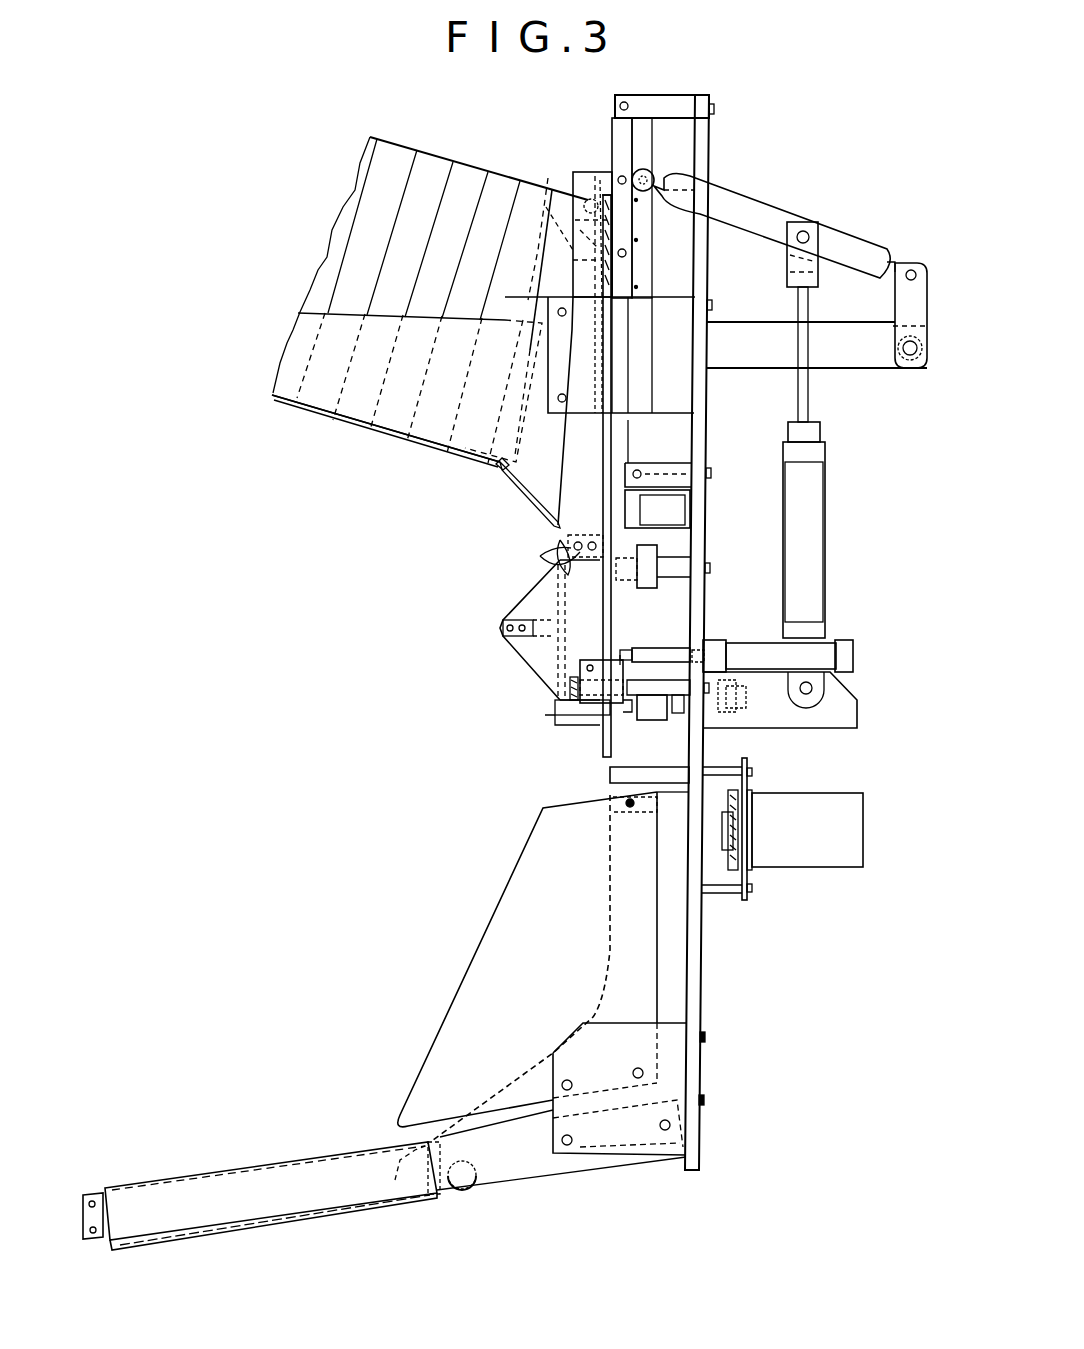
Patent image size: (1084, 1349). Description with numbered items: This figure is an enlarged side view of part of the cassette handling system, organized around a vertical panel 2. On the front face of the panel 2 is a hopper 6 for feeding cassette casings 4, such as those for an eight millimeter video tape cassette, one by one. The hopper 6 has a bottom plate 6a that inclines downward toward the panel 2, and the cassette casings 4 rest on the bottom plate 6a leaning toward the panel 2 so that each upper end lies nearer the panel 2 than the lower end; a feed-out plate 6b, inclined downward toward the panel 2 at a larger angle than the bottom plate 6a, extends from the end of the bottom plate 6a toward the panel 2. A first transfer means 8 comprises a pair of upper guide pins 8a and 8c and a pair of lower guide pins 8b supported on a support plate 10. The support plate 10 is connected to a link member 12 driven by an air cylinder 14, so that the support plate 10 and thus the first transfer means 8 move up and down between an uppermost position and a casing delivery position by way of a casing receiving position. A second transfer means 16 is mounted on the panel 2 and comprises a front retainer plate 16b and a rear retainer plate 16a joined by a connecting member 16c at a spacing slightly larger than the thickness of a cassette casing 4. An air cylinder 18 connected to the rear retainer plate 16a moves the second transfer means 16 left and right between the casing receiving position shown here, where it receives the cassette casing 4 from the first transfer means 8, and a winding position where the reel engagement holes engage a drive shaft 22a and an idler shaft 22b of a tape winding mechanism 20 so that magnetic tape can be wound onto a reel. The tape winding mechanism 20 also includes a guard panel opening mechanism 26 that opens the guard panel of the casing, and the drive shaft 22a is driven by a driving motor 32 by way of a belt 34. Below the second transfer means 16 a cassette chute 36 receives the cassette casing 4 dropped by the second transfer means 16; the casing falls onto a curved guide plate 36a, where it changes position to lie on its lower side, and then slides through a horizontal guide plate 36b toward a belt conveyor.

The panel 2 is at (710, 140).
The cassette casing 4 is at (435, 158).
The hopper 6 is at (360, 432).
The bottom plate 6a is at (394, 430).
The feed-out plate 6b is at (520, 480).
The first transfer means 8 is at (573, 252).
The upper guide pin 8a is at (545, 205).
The lower guide pins 8b is at (578, 548).
The upper guide pin 8c is at (590, 176).
The support plate 10 is at (574, 175).
The link member 12 is at (768, 205).
The air cylinder 14 is at (812, 525).
The second transfer means 16 is at (521, 703).
The rear retainer plate 16a is at (553, 725).
The front retainer plate 16b is at (590, 758).
The connecting member 16c is at (522, 680).
The air cylinder 18 is at (748, 643).
The tape winding mechanism 20 is at (675, 590).
The drive shaft 22a is at (650, 718).
The idler shaft 22b is at (648, 590).
The guard panel opening mechanism 26 is at (675, 550).
The driving motor 32 is at (800, 870).
The belt 34 is at (752, 756).
The cassette chute 36 is at (455, 972).
The curved guide plate 36a is at (608, 910).
The horizontal guide plate 36b is at (245, 1168).